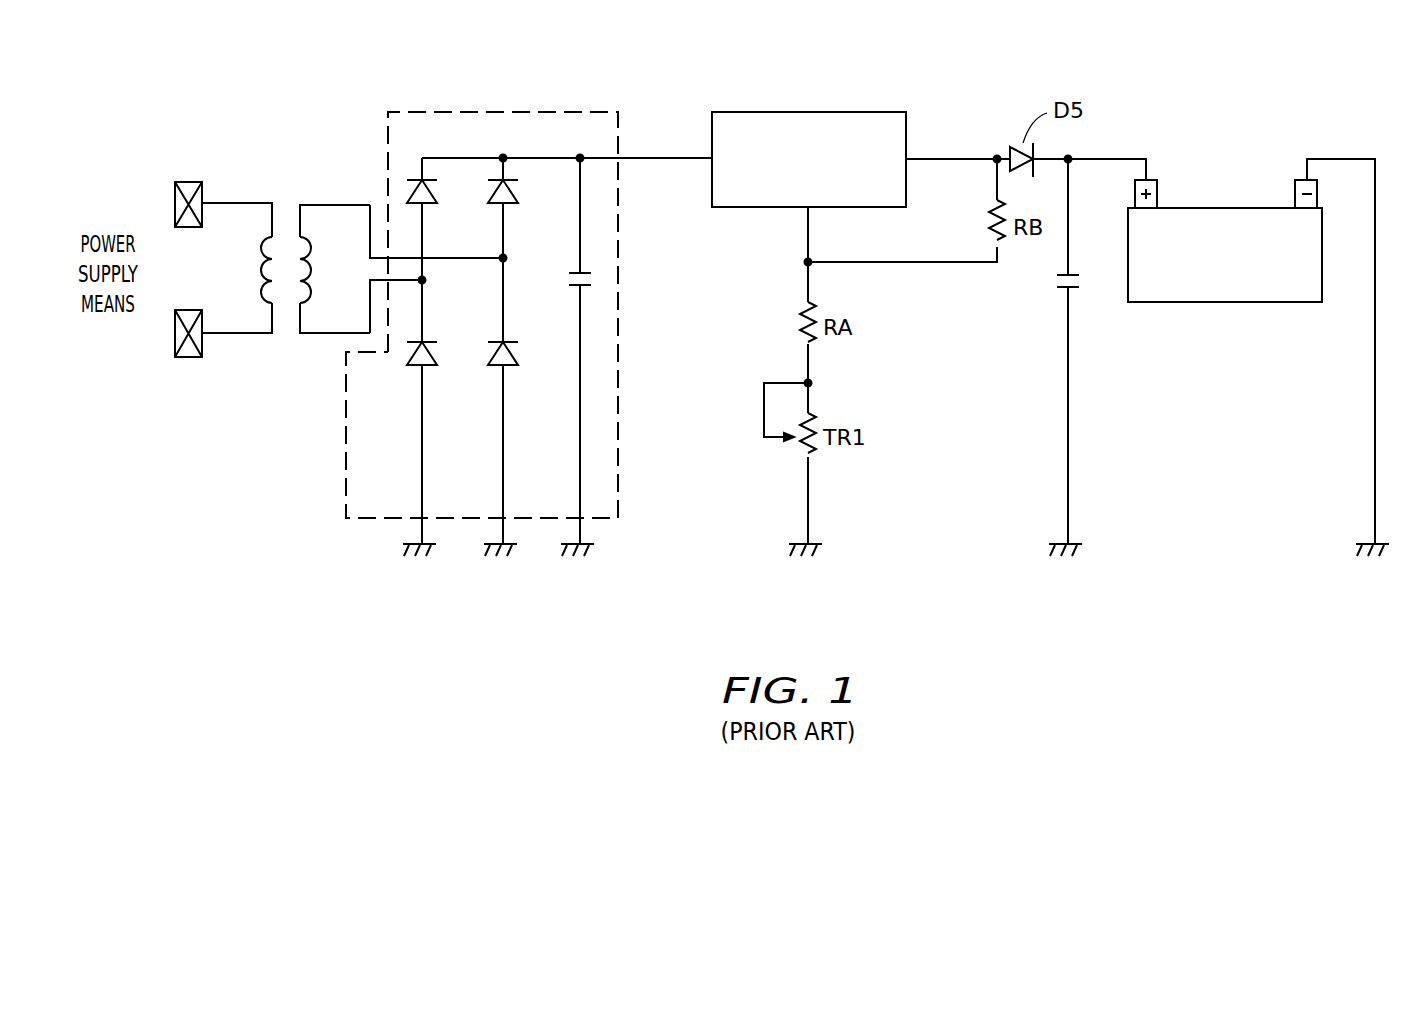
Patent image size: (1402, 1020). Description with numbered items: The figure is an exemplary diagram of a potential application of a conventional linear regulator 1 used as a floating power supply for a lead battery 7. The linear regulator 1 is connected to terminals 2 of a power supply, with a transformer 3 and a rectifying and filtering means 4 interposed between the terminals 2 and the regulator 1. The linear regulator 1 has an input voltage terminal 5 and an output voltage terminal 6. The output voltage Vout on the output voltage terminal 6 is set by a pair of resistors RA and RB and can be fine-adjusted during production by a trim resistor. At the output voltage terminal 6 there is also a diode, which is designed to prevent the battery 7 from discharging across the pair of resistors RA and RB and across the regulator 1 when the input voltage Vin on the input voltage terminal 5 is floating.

The linear regulator 1 is at (785, 112).
The terminals 2 is at (187, 182).
The transformer 3 is at (278, 250).
The rectifying and filtering means 4 is at (423, 110).
The input voltage terminal 5 is at (682, 158).
The output voltage terminal 6 is at (936, 159).
The battery 7 is at (1214, 302).